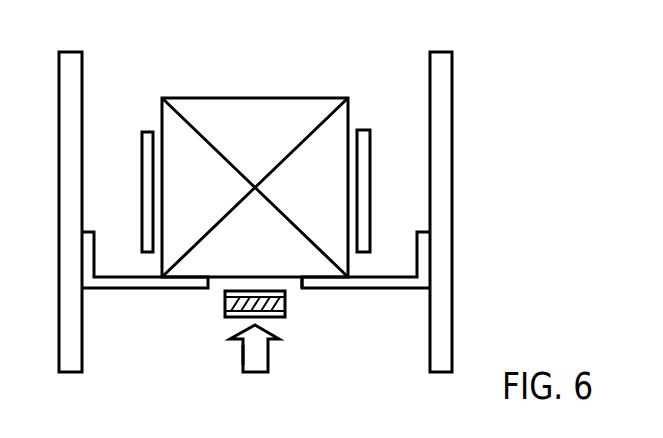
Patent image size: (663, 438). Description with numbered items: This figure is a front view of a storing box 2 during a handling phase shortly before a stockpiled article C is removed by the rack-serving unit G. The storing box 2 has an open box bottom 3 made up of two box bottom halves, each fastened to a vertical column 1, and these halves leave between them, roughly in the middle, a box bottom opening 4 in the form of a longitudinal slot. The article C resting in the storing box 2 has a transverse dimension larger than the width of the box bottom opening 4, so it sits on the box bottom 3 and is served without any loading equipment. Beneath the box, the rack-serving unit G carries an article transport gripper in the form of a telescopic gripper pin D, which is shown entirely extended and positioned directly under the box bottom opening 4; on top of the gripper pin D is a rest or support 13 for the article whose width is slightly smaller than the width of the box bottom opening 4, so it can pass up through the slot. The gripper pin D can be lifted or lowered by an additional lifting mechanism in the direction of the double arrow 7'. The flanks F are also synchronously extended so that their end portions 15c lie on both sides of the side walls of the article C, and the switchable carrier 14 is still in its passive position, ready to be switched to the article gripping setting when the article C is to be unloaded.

The vertical column 1 is at (441, 54).
The storing box 2 is at (408, 70).
The open box bottom 3 is at (145, 287).
The box bottom opening 4 is at (295, 286).
The double arrow 7' is at (237, 378).
The rest or support 13 is at (252, 291).
The carrier 14 is at (285, 316).
The end portion of flank 15c is at (143, 132).
The article C is at (258, 98).
The telescopic gripper pin D is at (240, 318).
The flanks F is at (143, 205).
The rack-serving unit G is at (225, 311).